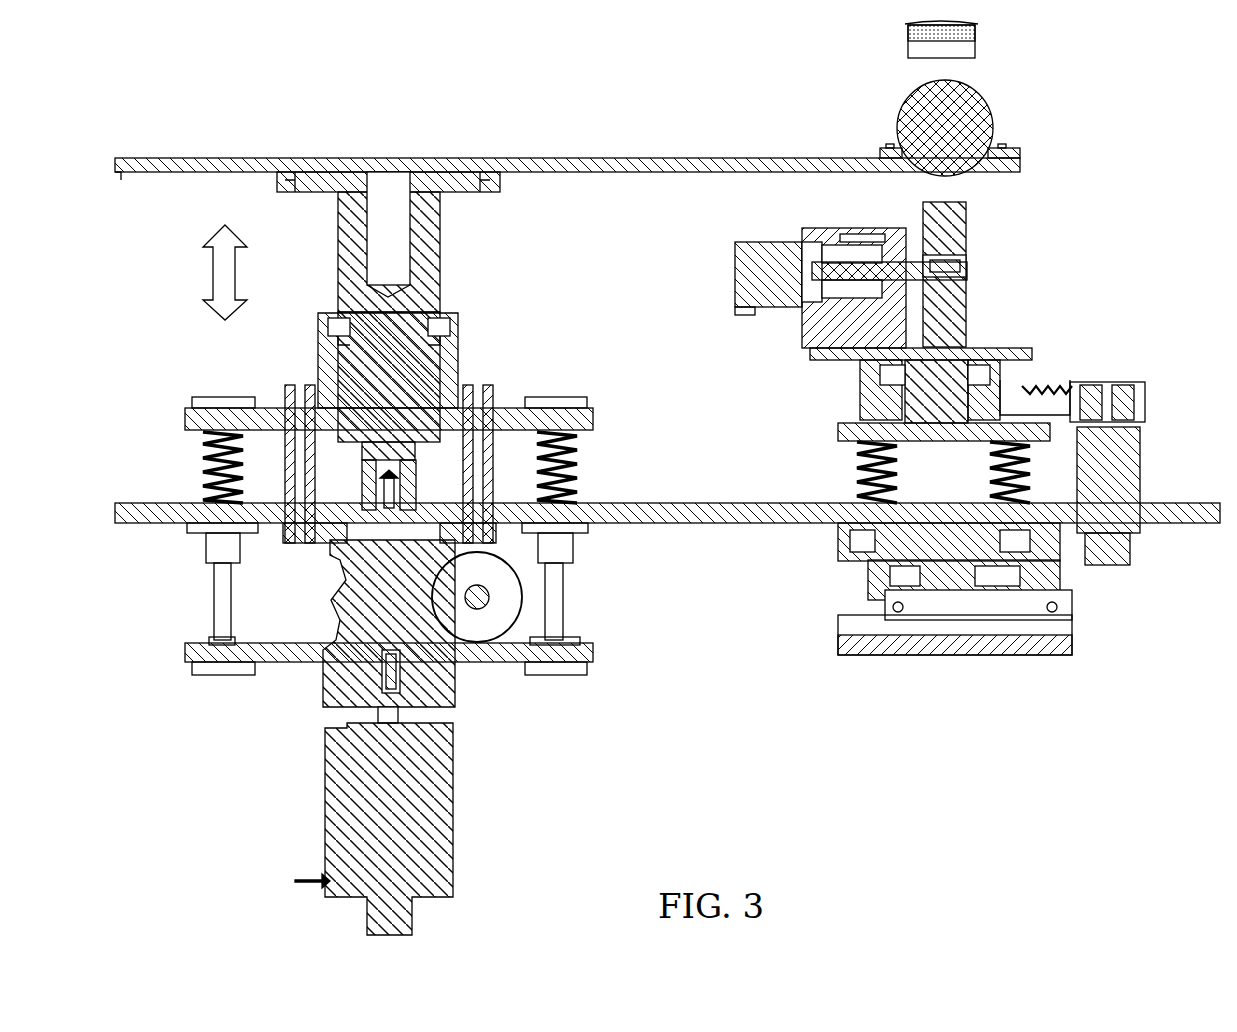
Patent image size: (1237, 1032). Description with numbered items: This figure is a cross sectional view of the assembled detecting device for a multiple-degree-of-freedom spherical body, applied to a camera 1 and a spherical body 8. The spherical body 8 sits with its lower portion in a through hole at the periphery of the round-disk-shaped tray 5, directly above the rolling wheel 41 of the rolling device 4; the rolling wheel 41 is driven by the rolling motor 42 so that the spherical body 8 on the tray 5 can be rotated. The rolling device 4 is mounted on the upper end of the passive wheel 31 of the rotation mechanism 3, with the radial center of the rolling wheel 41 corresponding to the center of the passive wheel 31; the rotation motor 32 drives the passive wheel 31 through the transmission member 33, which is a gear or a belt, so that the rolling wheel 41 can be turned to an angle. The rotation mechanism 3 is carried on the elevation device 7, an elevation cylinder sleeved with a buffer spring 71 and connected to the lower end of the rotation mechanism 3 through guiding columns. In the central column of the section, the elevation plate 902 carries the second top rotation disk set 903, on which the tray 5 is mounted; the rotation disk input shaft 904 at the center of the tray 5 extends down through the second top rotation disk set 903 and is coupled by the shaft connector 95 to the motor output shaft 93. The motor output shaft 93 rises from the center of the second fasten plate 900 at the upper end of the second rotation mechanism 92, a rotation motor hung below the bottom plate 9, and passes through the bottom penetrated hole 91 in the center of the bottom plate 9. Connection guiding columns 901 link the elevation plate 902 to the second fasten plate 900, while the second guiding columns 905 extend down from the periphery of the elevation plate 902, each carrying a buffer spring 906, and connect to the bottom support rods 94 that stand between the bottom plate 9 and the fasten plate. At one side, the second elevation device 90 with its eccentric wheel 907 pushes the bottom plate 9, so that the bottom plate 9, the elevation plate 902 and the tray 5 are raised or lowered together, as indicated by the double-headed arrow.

The camera 1 is at (975, 44).
The rotation mechanism 3 is at (1160, 385).
The rolling device 4 is at (716, 280).
The tray 5 is at (614, 158).
The elevation device 7 is at (1092, 608).
The spherical body 8 is at (898, 124).
The bottom plate 9 is at (185, 652).
The passive wheel 31 is at (862, 372).
The rotation motor 32 is at (1140, 456).
The transmission member 33 is at (1045, 385).
The rolling wheel 41 is at (967, 230).
The rolling motor 42 is at (768, 315).
The buffer spring 71 is at (857, 474).
The second elevation device 90 is at (540, 587).
The bottom penetrated hole 91 is at (455, 660).
The second rotation mechanism 92 is at (325, 818).
The motor output shaft 93 is at (340, 540).
The bottom support rod 94 is at (214, 590).
The shaft connector 95 is at (398, 478).
The second fasten plate 900 is at (573, 538).
The connection guiding column 901 is at (320, 520).
The elevation plate 902 is at (185, 416).
The second top rotation disk set 903 is at (338, 355).
The rotation disk input shaft 904 is at (405, 470).
The second guiding column 905 is at (205, 486).
The buffer spring 906 is at (203, 450).
The eccentric wheel 907 is at (505, 600).